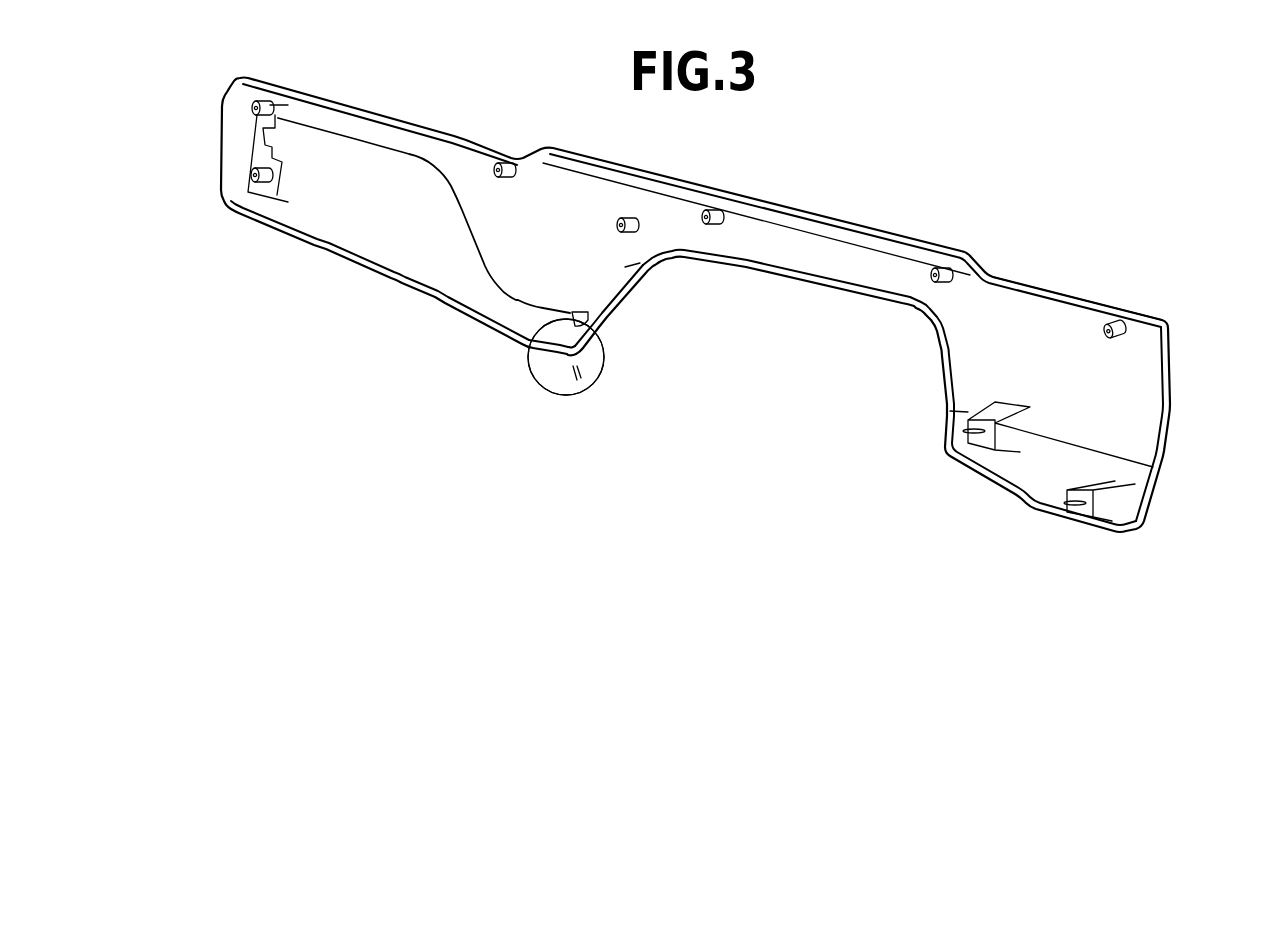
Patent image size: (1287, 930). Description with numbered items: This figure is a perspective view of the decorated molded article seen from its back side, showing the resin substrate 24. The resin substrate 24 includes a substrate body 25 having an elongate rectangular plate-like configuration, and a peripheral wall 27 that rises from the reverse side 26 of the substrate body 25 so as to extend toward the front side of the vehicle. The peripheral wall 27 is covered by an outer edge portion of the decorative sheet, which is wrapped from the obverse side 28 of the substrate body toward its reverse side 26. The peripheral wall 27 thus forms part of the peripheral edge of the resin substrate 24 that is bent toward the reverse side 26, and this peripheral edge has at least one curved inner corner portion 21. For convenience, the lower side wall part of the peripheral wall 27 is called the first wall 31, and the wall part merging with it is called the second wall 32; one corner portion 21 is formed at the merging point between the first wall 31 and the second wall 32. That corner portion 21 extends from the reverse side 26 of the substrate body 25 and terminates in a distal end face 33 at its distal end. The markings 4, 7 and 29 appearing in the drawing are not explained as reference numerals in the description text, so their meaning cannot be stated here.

The vehicle body member 4 is at (537, 377).
The mounting portion 7 is at (448, 433).
The curved inner corner portion 21 is at (228, 75).
The resin substrate 24 is at (1085, 287).
The substrate body 25 is at (1003, 322).
The reverse side 26 is at (860, 268).
The peripheral wall 27 is at (817, 295).
The obverse side 28 is at (1172, 413).
The clip tabs 29 is at (1051, 461).
The first wall 31 is at (490, 335).
The second wall 32 is at (612, 308).
The distal end face 33 is at (560, 355).